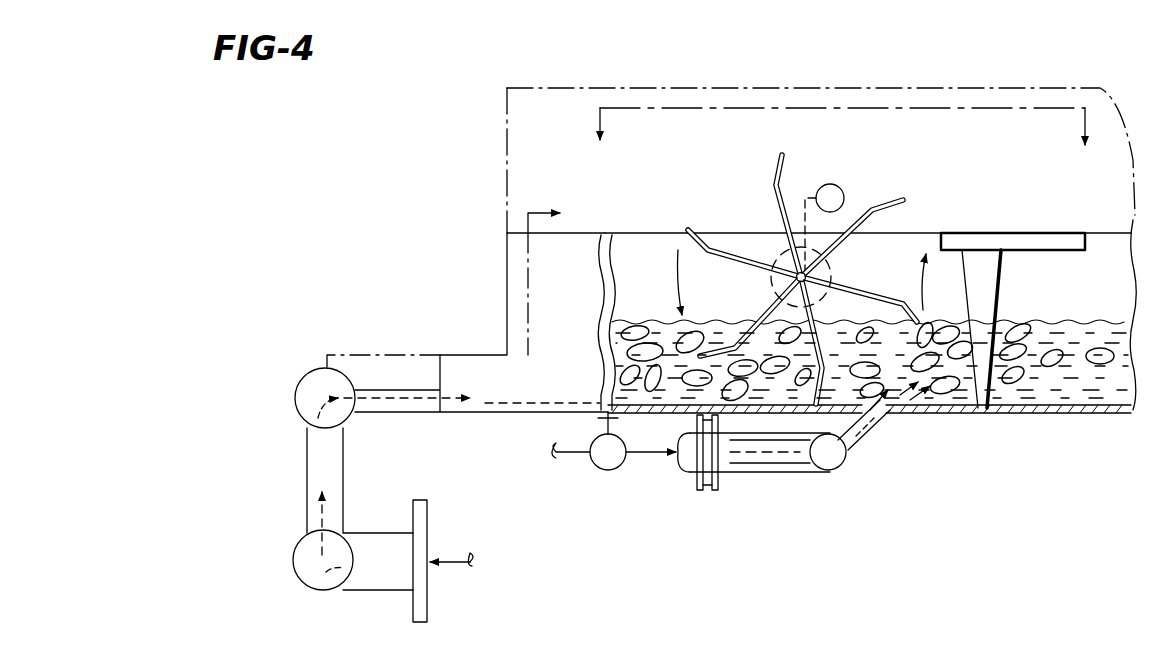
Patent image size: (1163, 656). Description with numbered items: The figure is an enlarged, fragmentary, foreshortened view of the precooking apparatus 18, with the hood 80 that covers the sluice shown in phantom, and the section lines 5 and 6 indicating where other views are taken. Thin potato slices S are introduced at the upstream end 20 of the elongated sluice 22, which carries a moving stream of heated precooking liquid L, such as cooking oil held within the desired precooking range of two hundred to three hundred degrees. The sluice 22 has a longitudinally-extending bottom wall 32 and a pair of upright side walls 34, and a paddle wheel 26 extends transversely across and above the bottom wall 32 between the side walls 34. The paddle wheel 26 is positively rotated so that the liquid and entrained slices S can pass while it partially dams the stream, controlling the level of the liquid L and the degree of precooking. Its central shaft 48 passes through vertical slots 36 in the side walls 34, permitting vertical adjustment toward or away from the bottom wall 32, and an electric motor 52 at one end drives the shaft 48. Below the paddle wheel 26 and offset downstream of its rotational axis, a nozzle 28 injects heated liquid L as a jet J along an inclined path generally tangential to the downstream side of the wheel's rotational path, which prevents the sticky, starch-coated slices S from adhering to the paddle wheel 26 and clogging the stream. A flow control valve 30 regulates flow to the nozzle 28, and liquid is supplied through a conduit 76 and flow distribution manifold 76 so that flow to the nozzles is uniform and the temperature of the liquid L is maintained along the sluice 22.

The precooking apparatus 18 is at (1040, 80).
The upstream end 20 is at (608, 320).
The elongated sluice 22 is at (1049, 420).
The paddle wheel 26 is at (885, 200).
The nozzle 28 is at (872, 425).
The flow control valve 30 is at (608, 470).
The bottom wall 32 is at (1092, 415).
The side wall 34 is at (648, 233).
The vertical slot 36 is at (832, 268).
The central shaft 48 is at (792, 280).
The electric motor 52 is at (838, 184).
The conduit 76 is at (343, 530).
The hood 80 is at (894, 88).
The section line 5 is at (837, 160).
The section line 6 is at (306, 622).
The potato slices S is at (650, 350).
The jets J is at (897, 408).
The precooking liquid L is at (1028, 408).